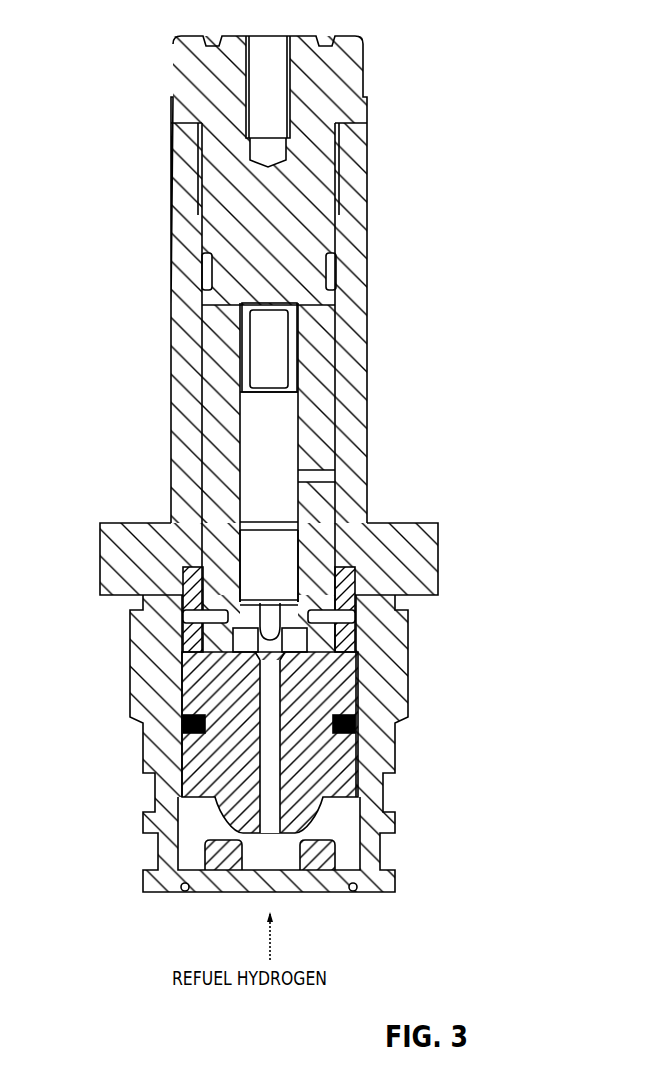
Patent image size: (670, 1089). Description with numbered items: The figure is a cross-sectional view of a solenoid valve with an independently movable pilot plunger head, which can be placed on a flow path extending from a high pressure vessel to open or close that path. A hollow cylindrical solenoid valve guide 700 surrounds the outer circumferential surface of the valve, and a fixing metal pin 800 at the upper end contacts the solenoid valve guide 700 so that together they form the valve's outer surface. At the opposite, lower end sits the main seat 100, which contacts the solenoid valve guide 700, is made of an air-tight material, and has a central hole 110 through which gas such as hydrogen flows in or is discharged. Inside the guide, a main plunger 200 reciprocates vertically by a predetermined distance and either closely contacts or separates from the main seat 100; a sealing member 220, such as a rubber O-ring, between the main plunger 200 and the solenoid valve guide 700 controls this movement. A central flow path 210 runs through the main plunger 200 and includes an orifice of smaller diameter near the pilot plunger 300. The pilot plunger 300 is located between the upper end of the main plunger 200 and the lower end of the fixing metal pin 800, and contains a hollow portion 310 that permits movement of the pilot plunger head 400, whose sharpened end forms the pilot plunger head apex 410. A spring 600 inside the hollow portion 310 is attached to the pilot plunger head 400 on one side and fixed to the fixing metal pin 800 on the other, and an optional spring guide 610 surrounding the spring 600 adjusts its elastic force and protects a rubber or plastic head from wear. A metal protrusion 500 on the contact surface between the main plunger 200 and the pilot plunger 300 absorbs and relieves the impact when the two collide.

The main seat 100 is at (320, 796).
The hole 110 is at (293, 893).
The main plunger 200 is at (263, 742).
The flow path 210 is at (283, 790).
The sealing member 220 is at (182, 722).
The pilot plunger 300 is at (330, 512).
The hollow portion 310 is at (266, 357).
The pilot plunger head 400 is at (247, 550).
The pilot plunger head apex 410 is at (300, 622).
The protrusion 500 is at (200, 665).
The spring 600 is at (272, 402).
The spring guide 610 is at (292, 420).
The solenoid valve guide 700 is at (418, 555).
The fixing metal pin 800 is at (345, 85).